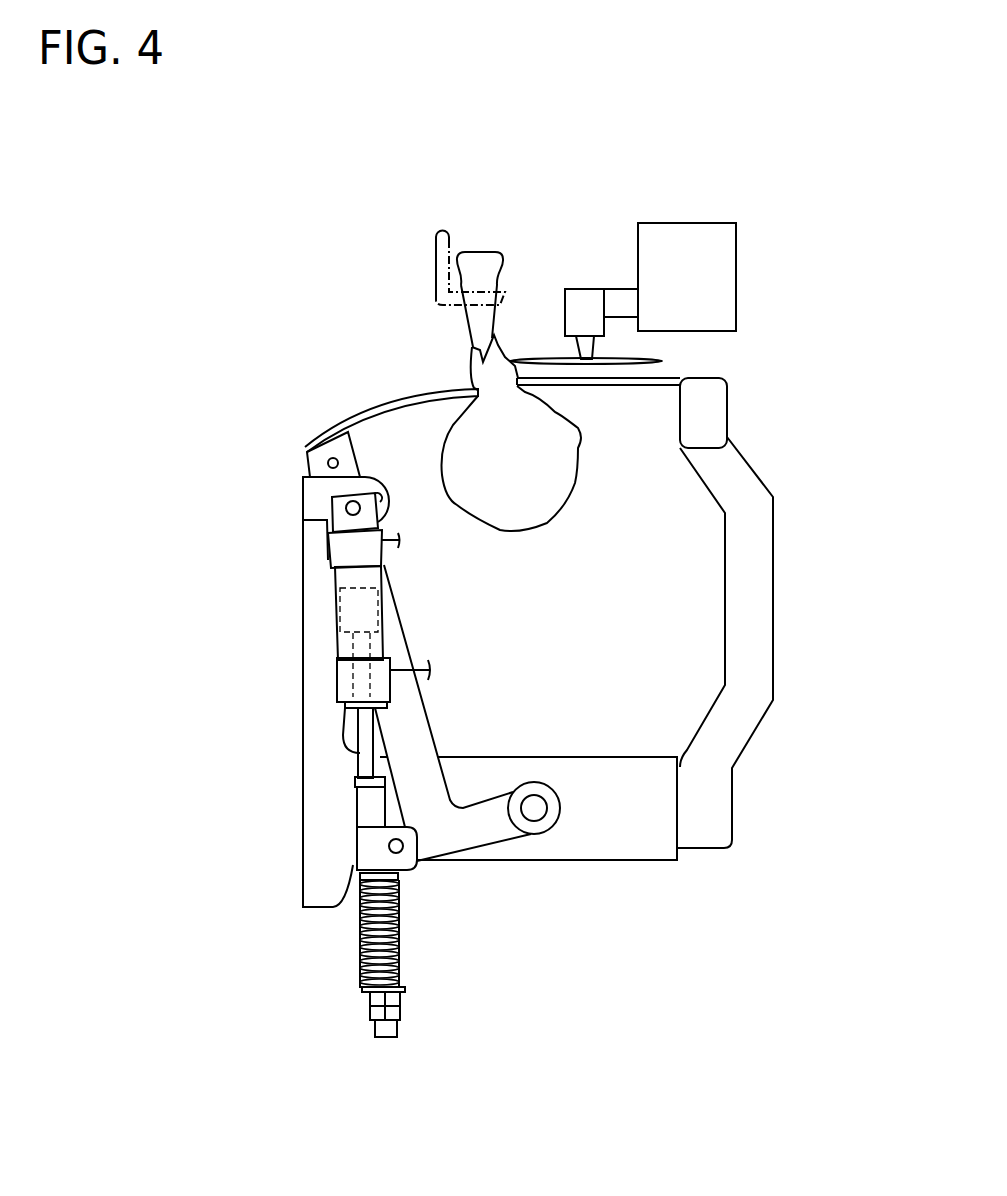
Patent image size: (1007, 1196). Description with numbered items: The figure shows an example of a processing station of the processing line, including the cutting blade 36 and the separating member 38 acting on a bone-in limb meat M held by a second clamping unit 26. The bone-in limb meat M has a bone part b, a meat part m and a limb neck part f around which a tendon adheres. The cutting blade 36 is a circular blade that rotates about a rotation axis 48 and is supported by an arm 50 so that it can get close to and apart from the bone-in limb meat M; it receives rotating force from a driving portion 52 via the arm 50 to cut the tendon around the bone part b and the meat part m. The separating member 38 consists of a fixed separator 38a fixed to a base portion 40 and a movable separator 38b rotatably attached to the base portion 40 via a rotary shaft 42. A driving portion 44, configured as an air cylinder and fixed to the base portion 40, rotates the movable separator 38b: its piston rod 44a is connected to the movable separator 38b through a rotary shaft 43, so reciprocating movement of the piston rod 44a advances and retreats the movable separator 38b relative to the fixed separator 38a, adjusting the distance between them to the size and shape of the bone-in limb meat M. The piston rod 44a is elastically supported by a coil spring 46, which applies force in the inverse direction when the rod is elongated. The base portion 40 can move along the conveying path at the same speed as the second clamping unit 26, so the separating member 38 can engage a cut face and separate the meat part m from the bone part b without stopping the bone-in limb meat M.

The second clamping unit 26 is at (436, 258).
The limb neck part f is at (472, 252).
The bone part b is at (477, 323).
The bone-in limb meat M is at (458, 348).
The separating member 38 is at (336, 394).
The movable separator 38b is at (400, 403).
The fixed separator 38a is at (625, 384).
The rotation axis 48 is at (582, 350).
The arm 50 is at (614, 293).
The driving portion 52 is at (703, 228).
The cutting blade 36 is at (630, 368).
The meat part m is at (563, 503).
The base portion 40 is at (312, 693).
The driving portion 44 is at (345, 648).
The piston rod 44a is at (370, 738).
The rotary shaft 43 is at (398, 851).
The rotary shaft 42 is at (540, 814).
The coil spring 46 is at (360, 950).